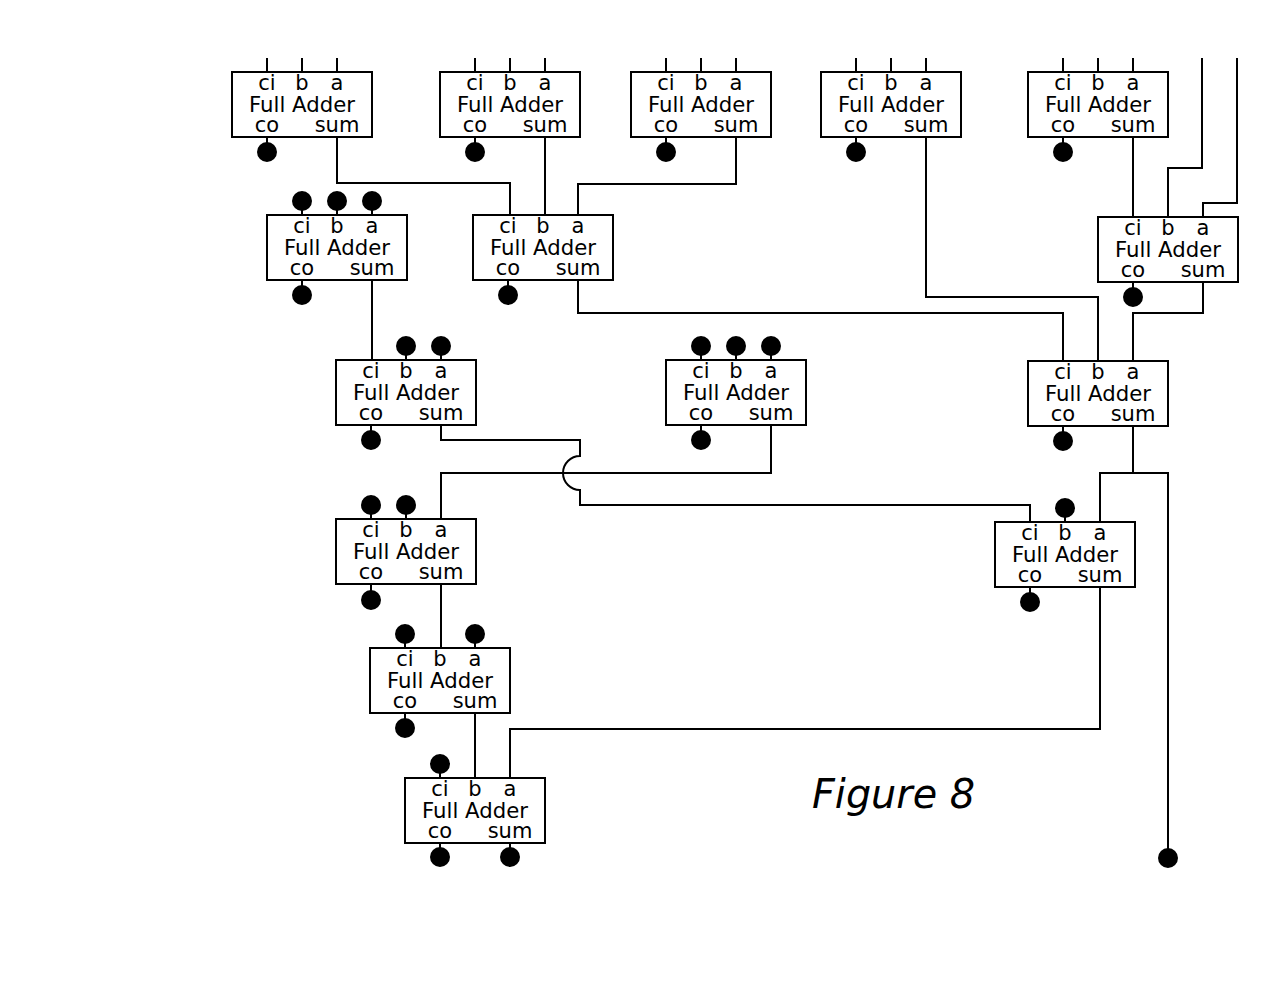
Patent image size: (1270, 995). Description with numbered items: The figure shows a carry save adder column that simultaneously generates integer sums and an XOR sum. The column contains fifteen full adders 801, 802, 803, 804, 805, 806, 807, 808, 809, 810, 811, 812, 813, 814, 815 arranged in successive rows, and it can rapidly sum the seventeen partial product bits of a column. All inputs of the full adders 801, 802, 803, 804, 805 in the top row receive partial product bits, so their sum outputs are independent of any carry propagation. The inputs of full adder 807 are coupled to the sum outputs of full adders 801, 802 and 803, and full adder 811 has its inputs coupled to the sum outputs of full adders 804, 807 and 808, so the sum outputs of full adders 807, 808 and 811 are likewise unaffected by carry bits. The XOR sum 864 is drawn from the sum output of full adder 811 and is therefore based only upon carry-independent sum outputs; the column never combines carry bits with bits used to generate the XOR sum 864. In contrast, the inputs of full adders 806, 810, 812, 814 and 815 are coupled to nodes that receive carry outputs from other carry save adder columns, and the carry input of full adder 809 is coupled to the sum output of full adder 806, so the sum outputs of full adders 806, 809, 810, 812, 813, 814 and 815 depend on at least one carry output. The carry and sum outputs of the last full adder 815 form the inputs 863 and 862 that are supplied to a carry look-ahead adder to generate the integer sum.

The full adder 801 is at (258, 72).
The full adder 802 is at (466, 72).
The full adder 803 is at (657, 72).
The full adder 804 is at (847, 72).
The full adder 805 is at (1054, 72).
The full adder 806 is at (289, 215).
The full adder 807 is at (495, 215).
The full adder 808 is at (1124, 217).
The full adder 809 is at (362, 360).
The full adder 810 is at (692, 360).
The full adder 811 is at (1054, 361).
The full adder 812 is at (362, 519).
The full adder 813 is at (995, 553).
The full adder 814 is at (396, 648).
The full adder 815 is at (431, 778).
The input to a carry look-ahead adder 862 is at (518, 863).
The input to a carry look-ahead adder 863 is at (432, 863).
The XOR sum 864 is at (1159, 858).